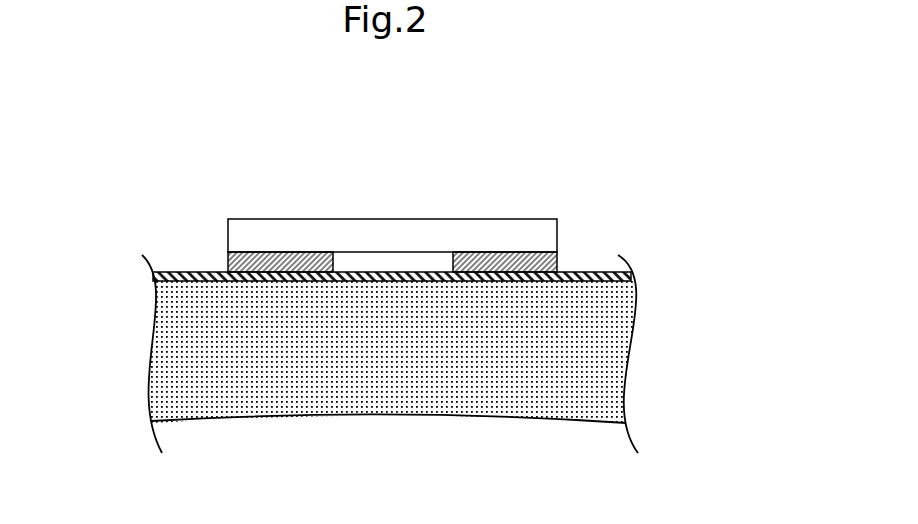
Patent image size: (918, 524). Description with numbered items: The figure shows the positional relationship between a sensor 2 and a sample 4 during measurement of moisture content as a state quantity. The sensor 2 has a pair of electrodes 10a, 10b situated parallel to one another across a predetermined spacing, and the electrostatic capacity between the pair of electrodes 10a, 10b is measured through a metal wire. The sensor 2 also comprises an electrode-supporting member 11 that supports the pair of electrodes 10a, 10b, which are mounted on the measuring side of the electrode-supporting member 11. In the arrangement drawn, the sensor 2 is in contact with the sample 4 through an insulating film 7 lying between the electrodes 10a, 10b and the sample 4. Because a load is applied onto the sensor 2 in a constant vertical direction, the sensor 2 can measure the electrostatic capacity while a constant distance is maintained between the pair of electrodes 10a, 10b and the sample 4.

The sensor 2 is at (555, 142).
The sample 4 is at (515, 395).
The insulating film 7 is at (594, 273).
The electrode 10a is at (227, 257).
The electrode 10b is at (558, 250).
The electrode-supporting member 11 is at (262, 230).